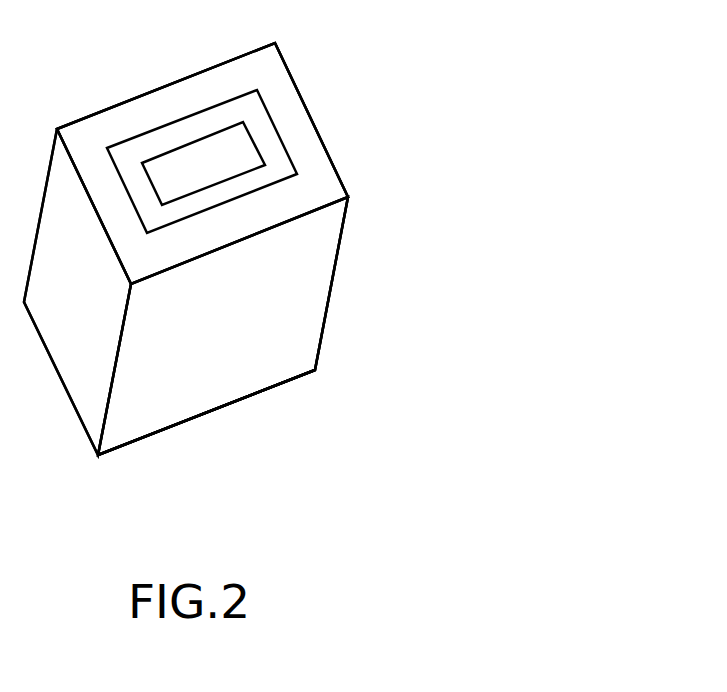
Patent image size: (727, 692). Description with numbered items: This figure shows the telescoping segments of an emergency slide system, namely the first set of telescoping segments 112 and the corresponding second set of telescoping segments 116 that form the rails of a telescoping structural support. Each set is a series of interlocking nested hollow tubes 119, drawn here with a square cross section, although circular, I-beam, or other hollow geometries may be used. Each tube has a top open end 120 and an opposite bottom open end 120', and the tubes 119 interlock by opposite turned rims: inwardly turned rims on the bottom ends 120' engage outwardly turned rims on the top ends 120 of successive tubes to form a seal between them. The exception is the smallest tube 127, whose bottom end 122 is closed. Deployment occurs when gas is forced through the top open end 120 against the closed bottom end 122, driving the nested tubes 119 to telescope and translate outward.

The first set of telescoping segments 112 is at (327, 48).
The second set of telescoping segments 116 is at (338, 45).
The interlocking nested hollow tubes 119 is at (272, 170).
The top open end 120 is at (189, 117).
The bottom open end 120' is at (286, 417).
The closed bottom end 122 is at (177, 425).
The smallest tube 127 is at (248, 462).